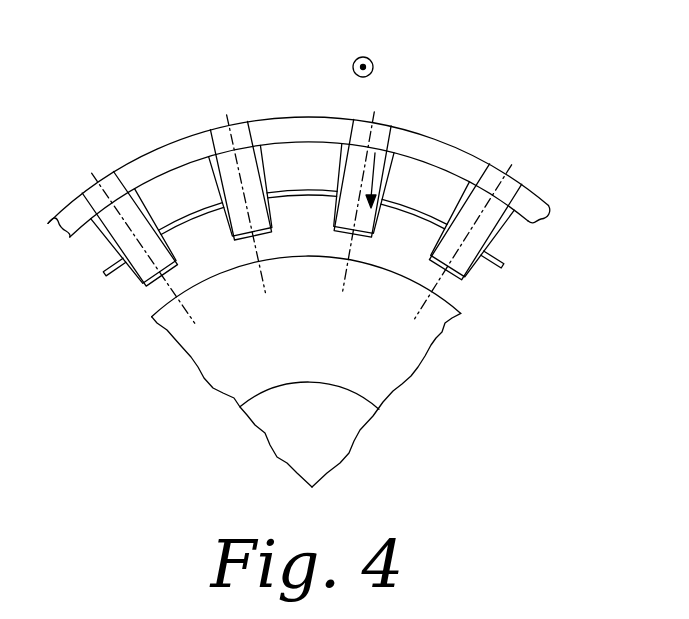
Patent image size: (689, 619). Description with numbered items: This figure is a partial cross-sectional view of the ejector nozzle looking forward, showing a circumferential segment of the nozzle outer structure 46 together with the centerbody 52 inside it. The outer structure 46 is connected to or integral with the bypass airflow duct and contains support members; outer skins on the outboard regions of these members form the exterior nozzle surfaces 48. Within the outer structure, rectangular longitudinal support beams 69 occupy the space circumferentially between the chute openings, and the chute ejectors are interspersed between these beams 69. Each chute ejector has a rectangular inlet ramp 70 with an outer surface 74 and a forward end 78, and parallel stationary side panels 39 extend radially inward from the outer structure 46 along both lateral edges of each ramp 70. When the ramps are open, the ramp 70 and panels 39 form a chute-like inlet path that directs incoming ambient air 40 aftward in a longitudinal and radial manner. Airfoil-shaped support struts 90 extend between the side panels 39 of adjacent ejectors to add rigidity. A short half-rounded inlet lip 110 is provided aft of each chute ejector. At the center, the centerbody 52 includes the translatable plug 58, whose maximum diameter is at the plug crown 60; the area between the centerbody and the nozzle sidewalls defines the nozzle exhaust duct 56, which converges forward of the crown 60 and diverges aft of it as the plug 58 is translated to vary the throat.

The stationary side panels 39 is at (168, 235).
The ambient air 40 is at (368, 58).
The outer structure 46 is at (122, 307).
The exterior nozzle surfaces 48 is at (540, 192).
The centerbody 52 is at (308, 380).
The nozzle exhaust duct 56 is at (412, 259).
The translatable plug 58 is at (396, 272).
The plug crown 60 is at (308, 256).
The longitudinal support beams 69 is at (182, 152).
The inlet ramp 70 is at (93, 212).
The outer surface 74 is at (245, 165).
The forward end 78 is at (113, 173).
The support struts 90 is at (181, 213).
The inlet lip 110 is at (362, 123).